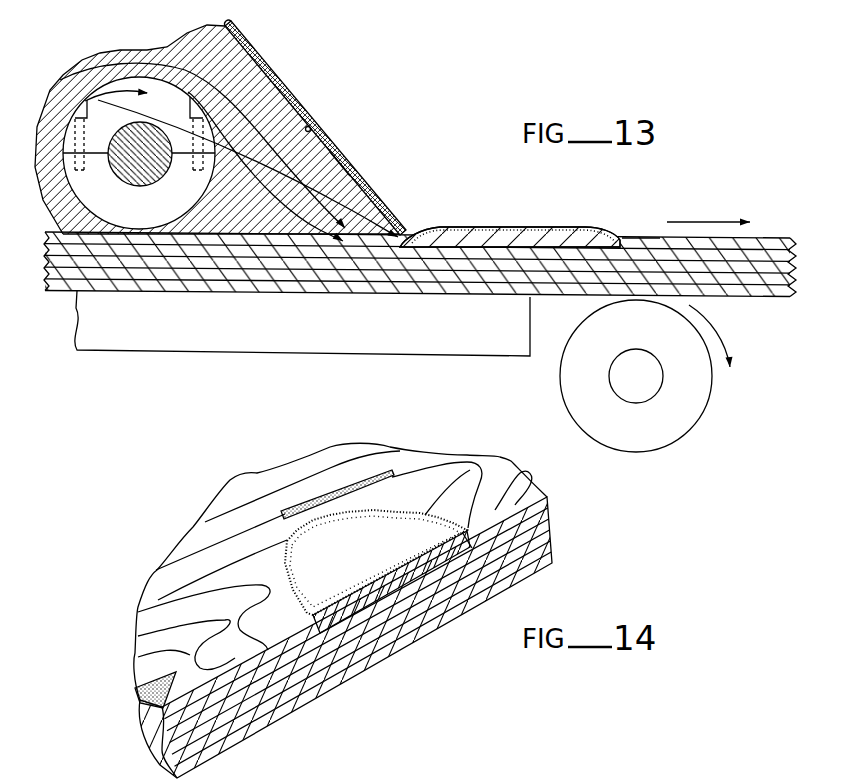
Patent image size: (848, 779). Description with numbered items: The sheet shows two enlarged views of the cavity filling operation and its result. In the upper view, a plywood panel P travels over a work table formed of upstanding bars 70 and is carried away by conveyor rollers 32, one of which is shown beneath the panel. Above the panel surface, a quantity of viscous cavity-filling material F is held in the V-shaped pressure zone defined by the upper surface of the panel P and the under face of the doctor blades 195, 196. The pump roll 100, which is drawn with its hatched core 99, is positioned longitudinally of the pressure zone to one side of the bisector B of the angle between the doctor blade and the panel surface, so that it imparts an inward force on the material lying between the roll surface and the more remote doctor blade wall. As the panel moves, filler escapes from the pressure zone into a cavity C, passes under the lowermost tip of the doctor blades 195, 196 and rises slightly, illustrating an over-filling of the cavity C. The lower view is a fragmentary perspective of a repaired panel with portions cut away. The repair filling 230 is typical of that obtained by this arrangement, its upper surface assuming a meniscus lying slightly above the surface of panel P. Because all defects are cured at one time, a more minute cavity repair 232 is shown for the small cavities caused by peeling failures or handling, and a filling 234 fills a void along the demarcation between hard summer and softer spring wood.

In FIG. 13, the bisector B is at (63, 76).
In FIG. 13, the cavity-filling material F is at (181, 40).
In FIG. 13, the pump roll 100 is at (118, 89).
In FIG. 13, the roller 99 is at (140, 154).
In FIG. 13, the doctor blade 195 is at (310, 128).
In FIG. 13, the doctor blade 196 is at (340, 156).
In FIG. 13, the repair filling 230 is at (477, 228).
In FIG. 14, the repair filling 230 is at (376, 564).
In FIG. 13, the cavity C is at (590, 247).
In FIG. 14, the cavity C is at (470, 543).
In FIG. 13, the panel P is at (620, 262).
In FIG. 14, the panel P is at (550, 538).
In FIG. 13, the rollers 32 is at (640, 333).
In FIG. 13, the upstanding bars 70 is at (247, 342).
In FIG. 14, the filling 234 is at (326, 489).
In FIG. 14, the minute cavity repair 232 is at (138, 697).